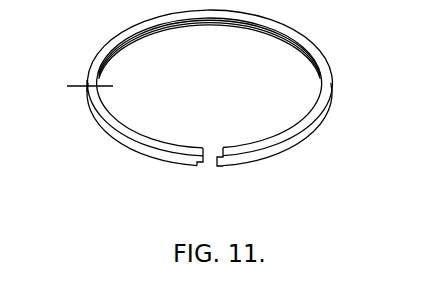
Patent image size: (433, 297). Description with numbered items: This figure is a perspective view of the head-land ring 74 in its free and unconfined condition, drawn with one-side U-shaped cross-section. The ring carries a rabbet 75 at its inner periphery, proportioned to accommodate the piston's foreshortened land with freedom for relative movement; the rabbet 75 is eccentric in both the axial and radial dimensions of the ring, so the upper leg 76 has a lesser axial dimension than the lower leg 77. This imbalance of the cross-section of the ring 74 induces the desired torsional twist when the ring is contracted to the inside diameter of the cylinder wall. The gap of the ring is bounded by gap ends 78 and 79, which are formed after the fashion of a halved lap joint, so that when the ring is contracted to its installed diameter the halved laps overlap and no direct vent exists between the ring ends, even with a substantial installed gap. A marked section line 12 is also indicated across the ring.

The section line 12 is at (90, 87).
The head-land ring 74 is at (298, 143).
The rabbet 75 is at (168, 30).
The upper leg 76 is at (330, 77).
The lower leg 77 is at (251, 33).
The gap end 78 is at (203, 150).
The gap end 79 is at (221, 167).